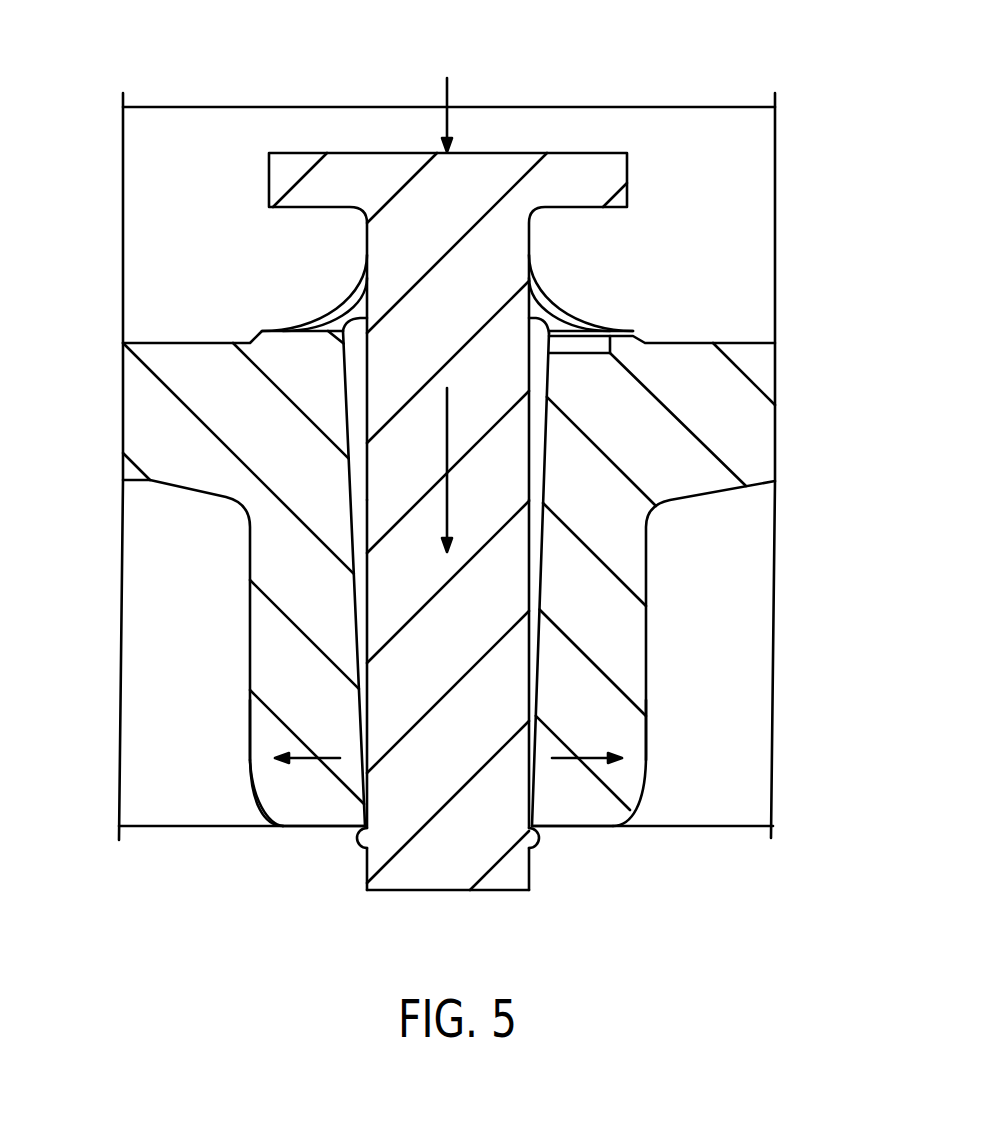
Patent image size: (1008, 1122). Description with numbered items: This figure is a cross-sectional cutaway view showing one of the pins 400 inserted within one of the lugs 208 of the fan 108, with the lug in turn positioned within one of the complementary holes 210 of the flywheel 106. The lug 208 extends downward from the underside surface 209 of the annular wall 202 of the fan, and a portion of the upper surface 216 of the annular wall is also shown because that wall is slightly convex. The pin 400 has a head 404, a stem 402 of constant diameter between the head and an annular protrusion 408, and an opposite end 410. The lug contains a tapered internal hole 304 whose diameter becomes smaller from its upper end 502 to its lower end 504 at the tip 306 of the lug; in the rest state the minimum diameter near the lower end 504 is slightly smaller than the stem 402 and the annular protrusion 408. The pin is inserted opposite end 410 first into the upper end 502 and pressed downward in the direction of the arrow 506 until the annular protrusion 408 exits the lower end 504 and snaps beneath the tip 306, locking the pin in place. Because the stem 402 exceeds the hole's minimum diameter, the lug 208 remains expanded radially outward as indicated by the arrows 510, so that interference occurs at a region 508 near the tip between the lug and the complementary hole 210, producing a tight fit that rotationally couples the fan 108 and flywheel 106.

The flywheel 106 is at (770, 658).
The fan 108 is at (505, 564).
The annular wall 202 is at (762, 390).
The underside surface 209 is at (718, 492).
The complementary hole 210 is at (256, 634).
The upper surface 216 is at (288, 282).
The lug 208 is at (297, 812).
The tapered internal hole 304 is at (543, 414).
The tip 306 is at (323, 827).
The pin 400 is at (467, 306).
The stem 402 is at (467, 648).
The head 404 is at (448, 90).
The annular protrusion 408 is at (540, 838).
The opposite end 410 is at (447, 890).
The upper end 502 is at (550, 320).
The lower end 504 is at (533, 824).
The arrow 506 is at (445, 447).
The region 508 is at (645, 745).
The arrows 510 is at (313, 756).